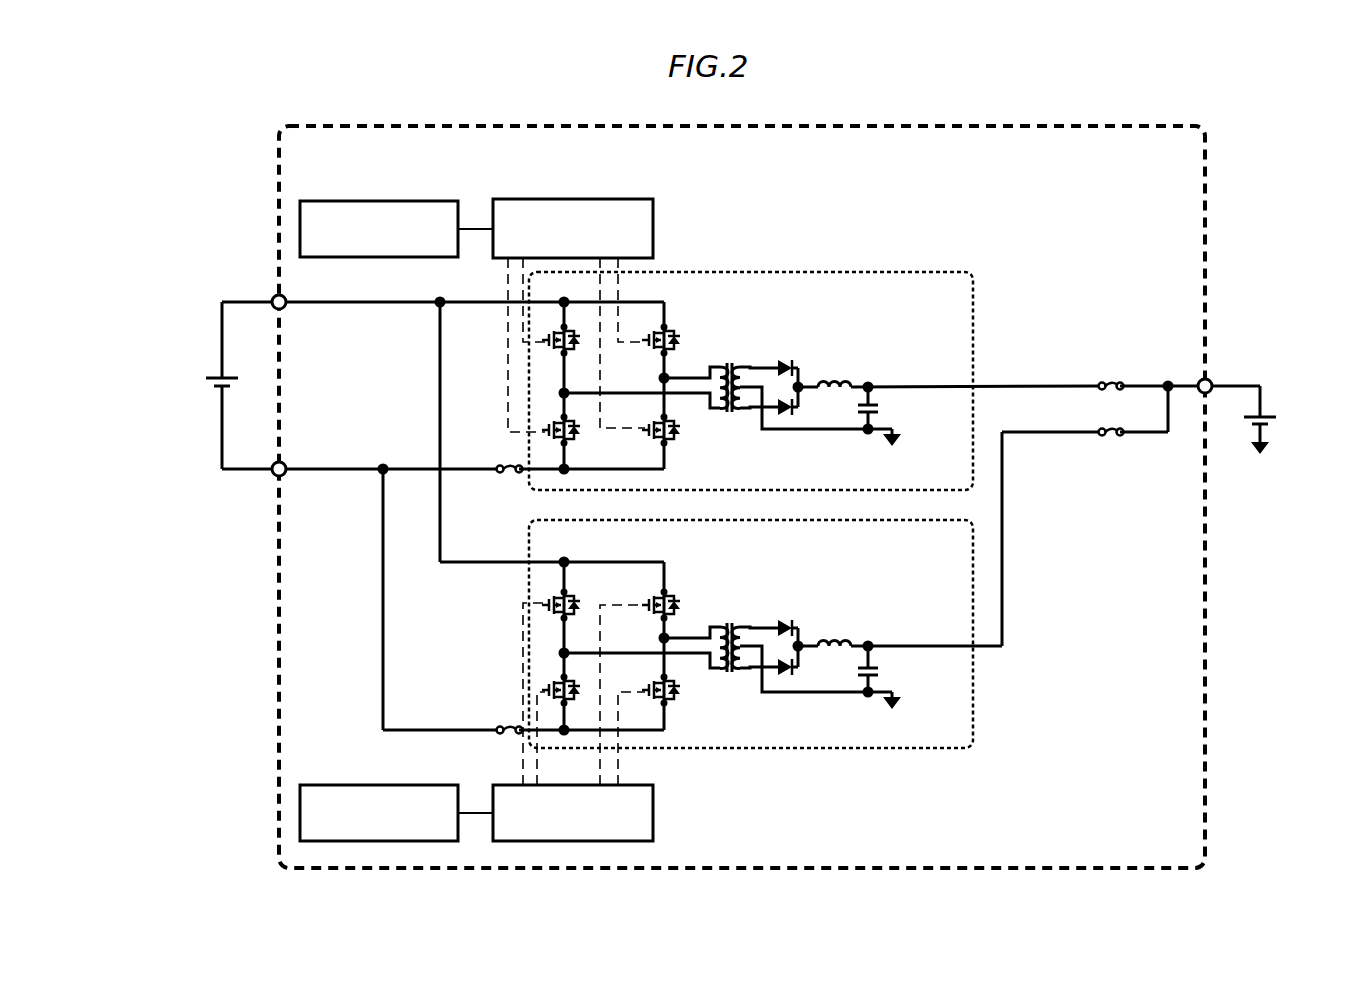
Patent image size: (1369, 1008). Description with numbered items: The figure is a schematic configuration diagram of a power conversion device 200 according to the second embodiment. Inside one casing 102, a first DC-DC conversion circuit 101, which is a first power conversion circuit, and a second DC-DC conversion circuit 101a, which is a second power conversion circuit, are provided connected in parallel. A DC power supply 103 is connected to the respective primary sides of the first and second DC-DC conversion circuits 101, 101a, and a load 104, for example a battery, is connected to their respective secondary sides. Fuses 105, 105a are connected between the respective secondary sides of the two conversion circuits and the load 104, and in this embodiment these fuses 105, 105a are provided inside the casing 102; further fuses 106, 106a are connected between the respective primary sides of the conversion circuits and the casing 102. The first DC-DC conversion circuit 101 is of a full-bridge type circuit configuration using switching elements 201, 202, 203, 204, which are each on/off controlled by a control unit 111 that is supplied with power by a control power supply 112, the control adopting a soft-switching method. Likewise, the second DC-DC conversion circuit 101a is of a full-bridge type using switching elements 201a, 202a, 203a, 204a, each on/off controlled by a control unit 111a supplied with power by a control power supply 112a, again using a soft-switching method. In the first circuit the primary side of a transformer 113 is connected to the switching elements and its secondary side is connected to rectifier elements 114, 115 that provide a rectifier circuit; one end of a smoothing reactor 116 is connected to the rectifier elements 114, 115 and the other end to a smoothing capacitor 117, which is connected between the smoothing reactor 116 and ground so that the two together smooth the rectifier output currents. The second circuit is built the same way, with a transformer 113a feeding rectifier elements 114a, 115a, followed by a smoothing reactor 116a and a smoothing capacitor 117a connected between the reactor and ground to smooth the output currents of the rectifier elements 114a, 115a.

The casing 102 is at (398, 126).
The power conversion device 200 is at (1303, 578).
The control power supply 112 is at (390, 201).
The control unit 111 is at (575, 199).
The control power supply 112a is at (380, 783).
The control unit 111a is at (653, 800).
The DC power supply 103 is at (204, 374).
The load 104 is at (1272, 414).
The fuse 105 is at (1110, 380).
The fuse 105a is at (1110, 437).
The fuse 106 is at (506, 474).
The fuse 106a is at (494, 727).
The first DC-DC conversion circuit 101 is at (826, 272).
The second DC-DC conversion circuit 101a is at (828, 748).
The switching element 201 is at (542, 340).
The switching element 202 is at (678, 334).
The switching element 203 is at (542, 432).
The switching element 204 is at (678, 434).
The switching element 201a is at (542, 605).
The switching element 202a is at (678, 600).
The switching element 203a is at (542, 692).
The switching element 204a is at (678, 694).
The transformer 113 is at (736, 366).
The transformer 113a is at (736, 626).
The rectifier element 114 is at (790, 364).
The rectifier element 115 is at (792, 414).
The rectifier element 114a is at (790, 624).
The rectifier element 115a is at (792, 674).
The smoothing reactor 116 is at (845, 378).
The smoothing reactor 116a is at (845, 638).
The smoothing capacitor 117 is at (878, 408).
The smoothing capacitor 117a is at (878, 672).